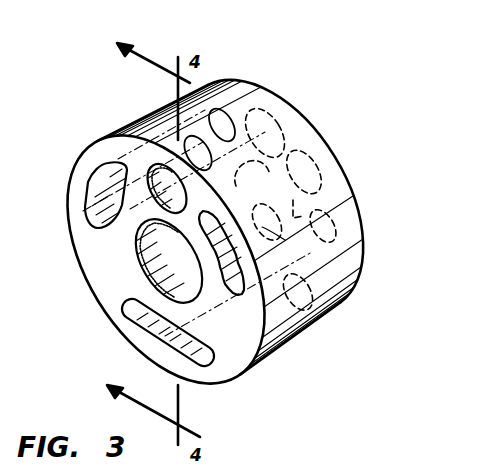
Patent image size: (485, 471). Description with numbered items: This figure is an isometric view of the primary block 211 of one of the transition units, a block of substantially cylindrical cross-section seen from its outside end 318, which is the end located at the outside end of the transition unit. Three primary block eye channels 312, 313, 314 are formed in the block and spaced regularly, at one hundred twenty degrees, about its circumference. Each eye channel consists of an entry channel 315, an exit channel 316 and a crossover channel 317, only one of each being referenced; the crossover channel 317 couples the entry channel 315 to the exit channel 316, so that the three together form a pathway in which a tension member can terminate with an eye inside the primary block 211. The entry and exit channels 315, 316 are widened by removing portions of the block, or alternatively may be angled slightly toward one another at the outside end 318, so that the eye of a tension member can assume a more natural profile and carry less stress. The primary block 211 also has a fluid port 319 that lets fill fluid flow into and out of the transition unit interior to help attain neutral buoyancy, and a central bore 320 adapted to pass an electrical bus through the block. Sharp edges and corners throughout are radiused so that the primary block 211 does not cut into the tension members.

The primary block 211 is at (229, 81).
The primary block eye channel 312 is at (97, 187).
The primary block eye channel 313 is at (245, 305).
The primary block eye channel 314 is at (130, 343).
The entry channel 315 is at (309, 160).
The exit channel 316 is at (322, 220).
The crossover channel 317 is at (258, 232).
The outside end 318 is at (300, 118).
The fluid port 319 is at (165, 183).
The central bore 320 is at (150, 270).